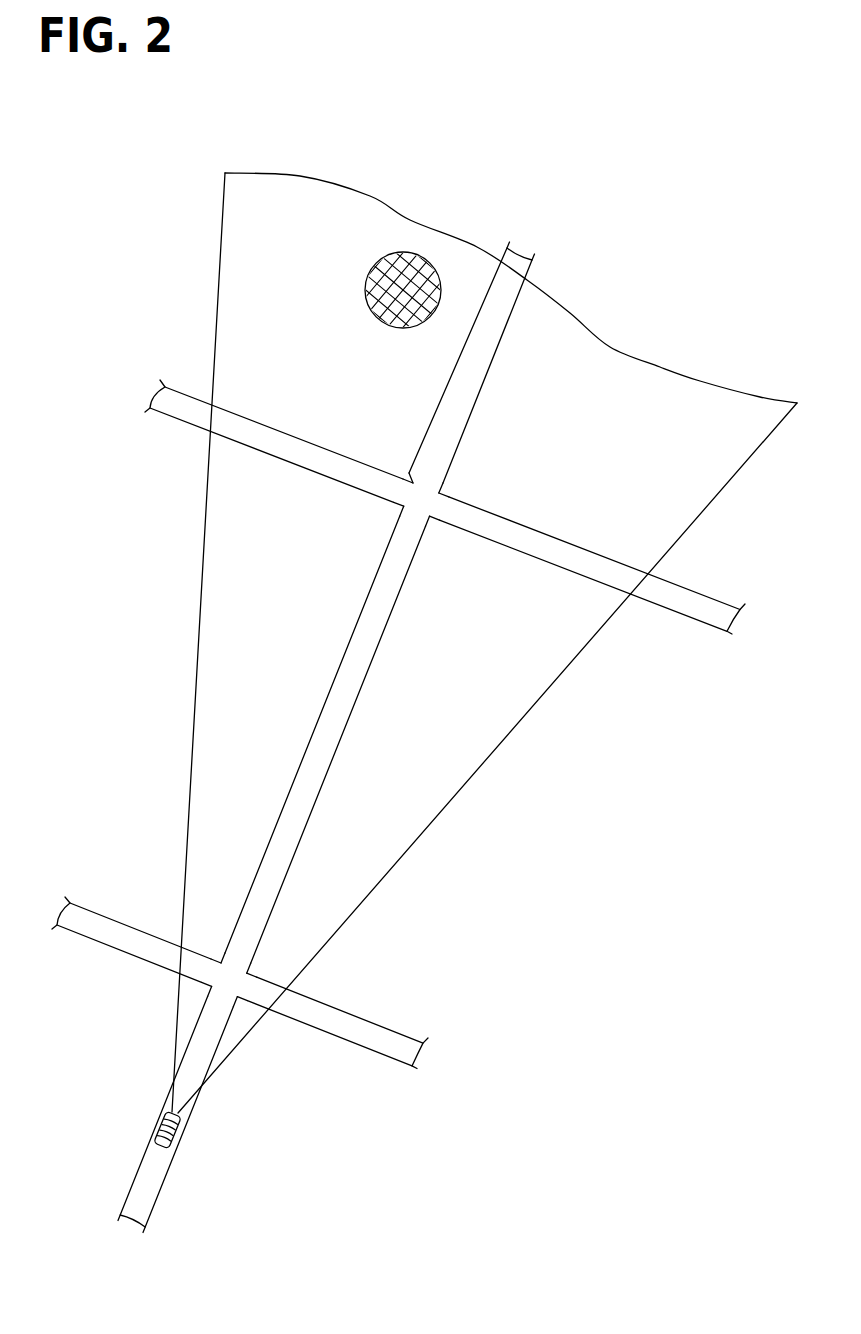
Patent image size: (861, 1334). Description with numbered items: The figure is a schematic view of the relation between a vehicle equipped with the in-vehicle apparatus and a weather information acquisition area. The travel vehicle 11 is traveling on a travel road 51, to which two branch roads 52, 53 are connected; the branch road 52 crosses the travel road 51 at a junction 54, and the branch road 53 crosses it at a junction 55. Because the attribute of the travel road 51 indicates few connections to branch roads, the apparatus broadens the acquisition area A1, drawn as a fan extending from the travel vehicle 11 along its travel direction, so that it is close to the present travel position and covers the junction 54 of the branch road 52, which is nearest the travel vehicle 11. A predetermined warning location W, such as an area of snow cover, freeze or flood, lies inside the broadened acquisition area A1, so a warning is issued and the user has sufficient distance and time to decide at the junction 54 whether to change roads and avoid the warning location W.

The travel vehicle 11 is at (157, 1130).
The travel road 51 is at (500, 343).
The branch road 52 is at (127, 922).
The branch road 53 is at (185, 387).
The junction 54 is at (247, 973).
The junction 55 is at (443, 492).
The acquisition area A1 is at (197, 640).
The warning location W is at (408, 252).